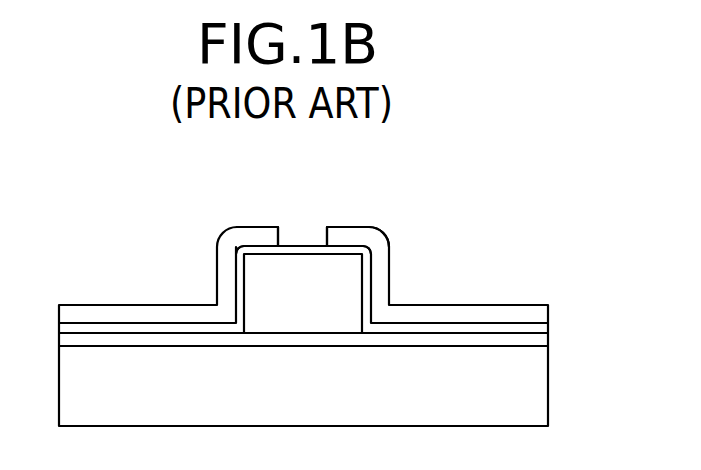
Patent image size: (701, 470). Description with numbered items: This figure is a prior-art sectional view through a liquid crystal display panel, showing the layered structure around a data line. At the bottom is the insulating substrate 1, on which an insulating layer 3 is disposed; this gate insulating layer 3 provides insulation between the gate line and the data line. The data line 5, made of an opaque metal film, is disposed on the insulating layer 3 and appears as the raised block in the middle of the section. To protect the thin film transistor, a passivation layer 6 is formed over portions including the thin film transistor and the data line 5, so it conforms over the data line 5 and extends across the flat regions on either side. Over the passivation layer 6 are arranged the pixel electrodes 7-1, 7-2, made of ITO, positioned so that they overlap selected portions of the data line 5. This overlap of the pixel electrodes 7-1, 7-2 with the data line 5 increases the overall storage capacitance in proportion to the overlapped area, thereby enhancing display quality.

The insulating substrate 1 is at (539, 396).
The gate insulating layer 3 is at (540, 340).
The data line 5 is at (348, 287).
The passivation layer 6 is at (539, 329).
The pixel electrode 7-1 is at (262, 230).
The pixel electrode 7-2 is at (357, 230).